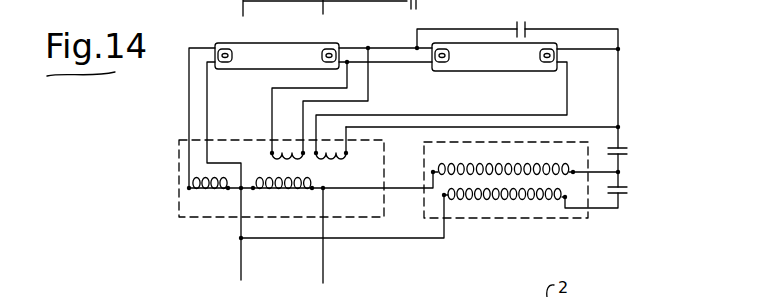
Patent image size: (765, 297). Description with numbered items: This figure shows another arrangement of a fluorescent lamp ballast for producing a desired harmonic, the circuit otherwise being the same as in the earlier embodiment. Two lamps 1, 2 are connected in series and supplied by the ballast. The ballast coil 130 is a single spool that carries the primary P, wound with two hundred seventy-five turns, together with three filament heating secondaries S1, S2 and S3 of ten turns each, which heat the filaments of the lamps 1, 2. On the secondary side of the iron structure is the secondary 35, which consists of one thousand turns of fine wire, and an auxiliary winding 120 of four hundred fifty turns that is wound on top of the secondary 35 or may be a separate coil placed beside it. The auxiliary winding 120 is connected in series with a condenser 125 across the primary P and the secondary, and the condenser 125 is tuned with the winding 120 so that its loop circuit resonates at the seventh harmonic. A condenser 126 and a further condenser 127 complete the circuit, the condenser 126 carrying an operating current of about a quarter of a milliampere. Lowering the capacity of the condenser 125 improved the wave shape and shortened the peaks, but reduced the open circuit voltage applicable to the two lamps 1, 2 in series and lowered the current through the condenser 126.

The first fluorescent lamp 1 is at (281, 42).
The second fluorescent lamp 2 is at (486, 73).
The condenser 127 is at (523, 13).
The condenser 126 is at (632, 151).
The condenser 125 is at (632, 191).
The coil 130 is at (179, 205).
The filament heating secondary S1 is at (202, 192).
The filament heating secondary S2 is at (289, 151).
The filament heating secondary S3 is at (333, 151).
The primary P is at (266, 192).
The auxiliary winding 120 is at (500, 201).
The secondary 35 is at (480, 165).